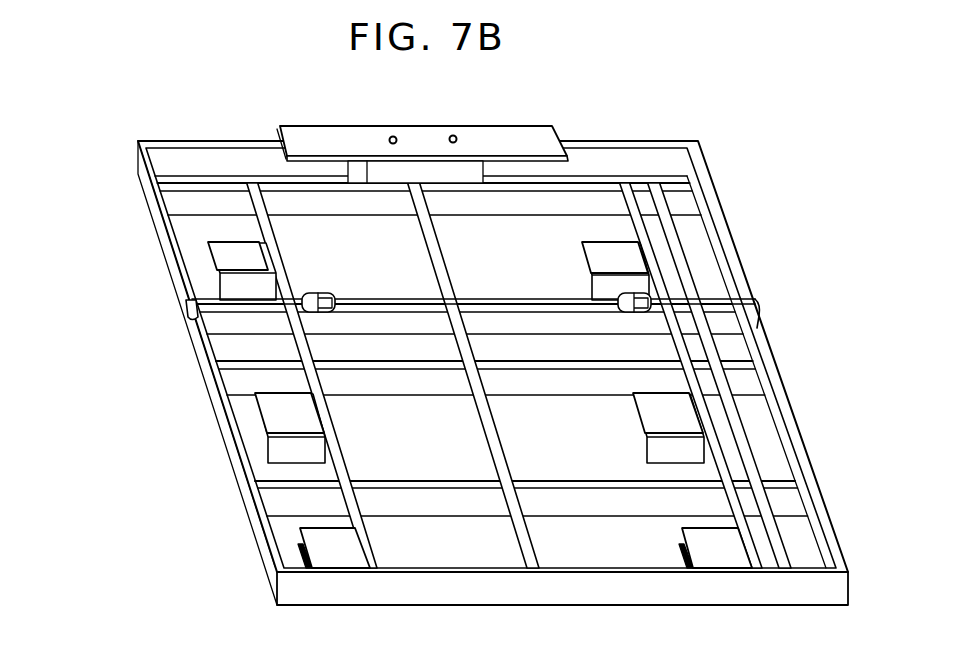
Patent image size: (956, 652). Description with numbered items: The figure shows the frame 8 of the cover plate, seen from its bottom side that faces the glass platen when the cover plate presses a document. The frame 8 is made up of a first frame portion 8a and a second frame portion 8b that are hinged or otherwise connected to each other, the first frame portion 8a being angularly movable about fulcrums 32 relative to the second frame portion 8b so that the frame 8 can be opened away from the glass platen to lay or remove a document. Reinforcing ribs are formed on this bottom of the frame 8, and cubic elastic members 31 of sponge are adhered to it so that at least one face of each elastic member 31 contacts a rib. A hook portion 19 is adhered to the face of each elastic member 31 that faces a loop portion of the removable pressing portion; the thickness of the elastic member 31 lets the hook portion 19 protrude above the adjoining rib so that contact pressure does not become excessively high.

The frame 8 is at (714, 164).
The first frame portion 8a is at (240, 481).
The second frame portion 8b is at (161, 232).
The hook portion 19 is at (223, 255).
The elastic member 31 is at (230, 286).
The fulcrum 32 is at (316, 314).